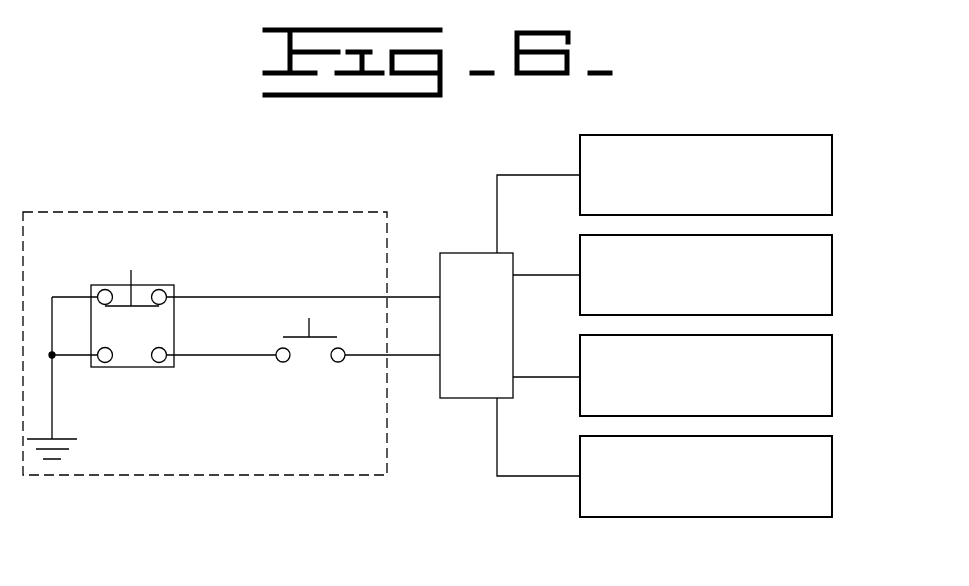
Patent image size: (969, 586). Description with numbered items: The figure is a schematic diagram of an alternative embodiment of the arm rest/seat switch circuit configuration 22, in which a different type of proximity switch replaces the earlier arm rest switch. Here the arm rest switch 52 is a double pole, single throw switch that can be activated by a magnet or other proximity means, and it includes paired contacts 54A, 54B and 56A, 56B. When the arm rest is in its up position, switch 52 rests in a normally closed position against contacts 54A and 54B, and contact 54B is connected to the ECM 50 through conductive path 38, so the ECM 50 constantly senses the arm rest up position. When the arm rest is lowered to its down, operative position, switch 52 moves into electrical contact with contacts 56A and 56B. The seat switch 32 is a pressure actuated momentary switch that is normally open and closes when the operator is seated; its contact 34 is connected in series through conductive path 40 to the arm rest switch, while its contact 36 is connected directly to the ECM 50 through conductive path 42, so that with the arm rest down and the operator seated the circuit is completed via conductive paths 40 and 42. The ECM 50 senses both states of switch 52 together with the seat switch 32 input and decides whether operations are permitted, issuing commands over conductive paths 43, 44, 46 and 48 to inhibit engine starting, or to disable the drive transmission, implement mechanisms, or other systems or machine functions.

The circuit configuration 22 is at (200, 496).
The seat switch 32 is at (294, 325).
The contact 34 is at (275, 351).
The contact 36 is at (345, 360).
The conductive path 38 is at (333, 297).
The conductive path 40 is at (203, 357).
The conductive path 42 is at (405, 356).
The conductive path 43 is at (527, 175).
The conductive path 44 is at (541, 275).
The conductive path 46 is at (557, 377).
The conductive path 48 is at (541, 476).
The ECM 50 is at (480, 253).
The arm rest switch 52 is at (142, 275).
The contact 54A is at (97, 292).
The contact 54B is at (176, 296).
The contact 56A is at (104, 363).
The contact 56B is at (162, 363).